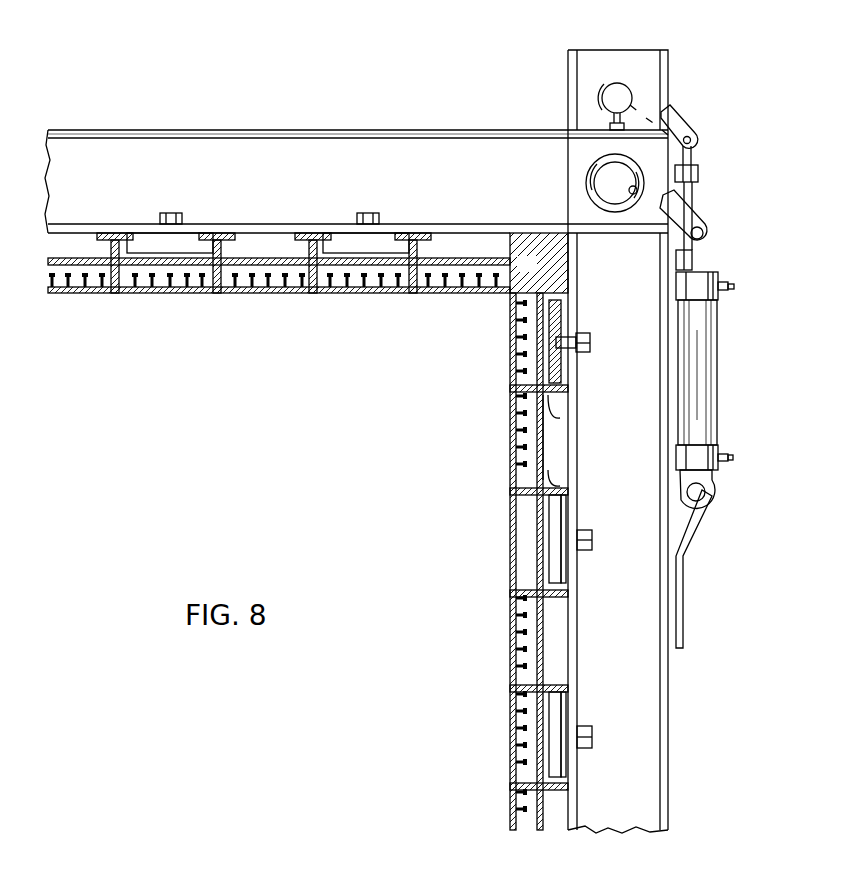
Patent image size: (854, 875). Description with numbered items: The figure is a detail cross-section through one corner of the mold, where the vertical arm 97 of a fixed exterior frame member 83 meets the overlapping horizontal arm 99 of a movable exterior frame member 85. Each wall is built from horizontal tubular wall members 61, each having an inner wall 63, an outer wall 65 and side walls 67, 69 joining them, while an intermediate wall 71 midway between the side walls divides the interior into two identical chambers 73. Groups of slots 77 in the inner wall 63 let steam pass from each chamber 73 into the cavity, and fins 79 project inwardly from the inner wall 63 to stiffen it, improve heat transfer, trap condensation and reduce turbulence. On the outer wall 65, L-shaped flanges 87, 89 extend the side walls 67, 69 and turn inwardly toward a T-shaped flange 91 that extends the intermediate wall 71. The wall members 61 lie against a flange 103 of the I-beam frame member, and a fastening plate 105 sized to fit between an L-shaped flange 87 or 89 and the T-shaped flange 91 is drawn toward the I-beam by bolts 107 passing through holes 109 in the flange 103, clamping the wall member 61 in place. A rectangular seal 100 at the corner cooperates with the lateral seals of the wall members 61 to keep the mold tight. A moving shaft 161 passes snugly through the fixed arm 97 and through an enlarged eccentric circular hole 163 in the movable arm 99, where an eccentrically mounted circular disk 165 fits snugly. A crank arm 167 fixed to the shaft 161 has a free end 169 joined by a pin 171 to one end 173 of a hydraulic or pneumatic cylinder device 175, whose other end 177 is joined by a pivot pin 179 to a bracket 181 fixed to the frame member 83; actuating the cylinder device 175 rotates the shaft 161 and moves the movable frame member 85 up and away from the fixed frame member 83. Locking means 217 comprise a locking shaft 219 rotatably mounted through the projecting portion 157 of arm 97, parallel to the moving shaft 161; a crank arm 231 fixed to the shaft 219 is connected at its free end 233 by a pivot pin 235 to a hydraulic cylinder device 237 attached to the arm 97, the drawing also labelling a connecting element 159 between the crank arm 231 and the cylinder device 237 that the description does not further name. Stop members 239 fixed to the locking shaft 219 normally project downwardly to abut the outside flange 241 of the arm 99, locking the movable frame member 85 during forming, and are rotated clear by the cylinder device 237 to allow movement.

The tubular wall member 61 is at (245, 293).
The inner wall 63 is at (512, 472).
The outer wall 65 is at (544, 455).
The side wall 67 is at (529, 265).
The side wall 69 is at (512, 482).
The intermediate wall 71 is at (512, 383).
The chamber 73 is at (512, 318).
The slot 77 is at (510, 352).
The fin 79 is at (134, 293).
The exterior frame member 83 is at (692, 731).
The exterior frame member 85 is at (137, 116).
The L-shaped flange 87 is at (560, 300).
The L-shaped flange 89 is at (548, 480).
The T-shaped flange 91 is at (560, 418).
The arm 97 is at (670, 672).
The arm 99 is at (231, 129).
The rectangular seal 100 is at (517, 233).
The flange 103 is at (327, 198).
The fastening plate 105 is at (150, 240).
The bolt 107 is at (182, 213).
The hole 109 is at (574, 352).
The portion 157 is at (620, 34).
The pin 159 is at (692, 160).
The moving shaft 161 is at (628, 192).
The circular hole 163 is at (693, 203).
The circular disk 165 is at (590, 170).
The crank arm 167 is at (708, 222).
The free end 169 is at (705, 238).
The pin 171 is at (692, 258).
The end 173 is at (712, 274).
The hydraulic or pneumatic cylinder device 175 is at (717, 382).
The end 177 is at (712, 466).
The pivot pin 179 is at (706, 500).
The bracket 181 is at (700, 530).
The locking means 217 is at (676, 112).
The locking shaft 219 is at (604, 95).
The crank arm 231 is at (680, 120).
The free end 233 is at (692, 142).
The pivot pin 235 is at (694, 135).
The hydraulic cylinder device 237 is at (700, 180).
The stop member 239 is at (650, 140).
The outside flange 241 is at (346, 130).